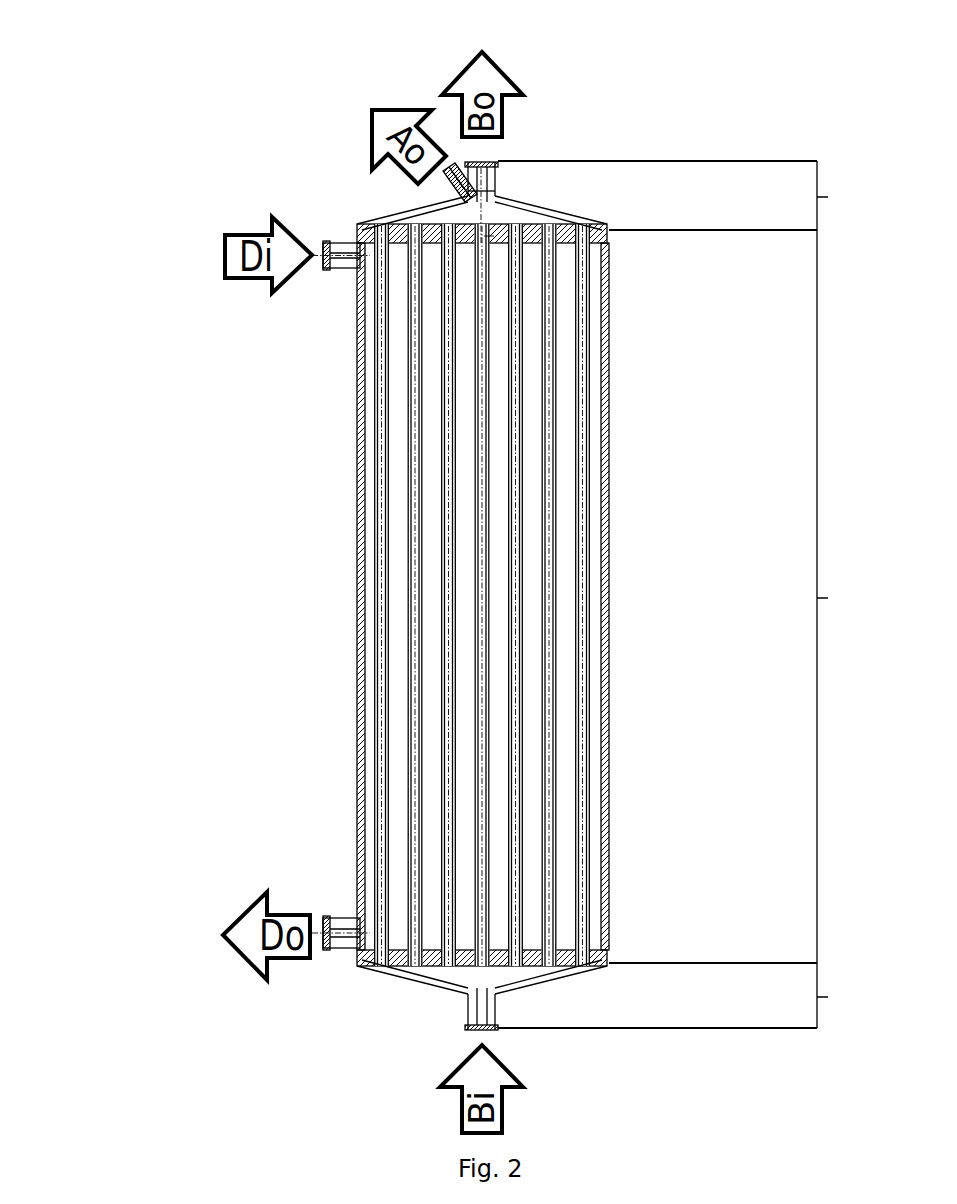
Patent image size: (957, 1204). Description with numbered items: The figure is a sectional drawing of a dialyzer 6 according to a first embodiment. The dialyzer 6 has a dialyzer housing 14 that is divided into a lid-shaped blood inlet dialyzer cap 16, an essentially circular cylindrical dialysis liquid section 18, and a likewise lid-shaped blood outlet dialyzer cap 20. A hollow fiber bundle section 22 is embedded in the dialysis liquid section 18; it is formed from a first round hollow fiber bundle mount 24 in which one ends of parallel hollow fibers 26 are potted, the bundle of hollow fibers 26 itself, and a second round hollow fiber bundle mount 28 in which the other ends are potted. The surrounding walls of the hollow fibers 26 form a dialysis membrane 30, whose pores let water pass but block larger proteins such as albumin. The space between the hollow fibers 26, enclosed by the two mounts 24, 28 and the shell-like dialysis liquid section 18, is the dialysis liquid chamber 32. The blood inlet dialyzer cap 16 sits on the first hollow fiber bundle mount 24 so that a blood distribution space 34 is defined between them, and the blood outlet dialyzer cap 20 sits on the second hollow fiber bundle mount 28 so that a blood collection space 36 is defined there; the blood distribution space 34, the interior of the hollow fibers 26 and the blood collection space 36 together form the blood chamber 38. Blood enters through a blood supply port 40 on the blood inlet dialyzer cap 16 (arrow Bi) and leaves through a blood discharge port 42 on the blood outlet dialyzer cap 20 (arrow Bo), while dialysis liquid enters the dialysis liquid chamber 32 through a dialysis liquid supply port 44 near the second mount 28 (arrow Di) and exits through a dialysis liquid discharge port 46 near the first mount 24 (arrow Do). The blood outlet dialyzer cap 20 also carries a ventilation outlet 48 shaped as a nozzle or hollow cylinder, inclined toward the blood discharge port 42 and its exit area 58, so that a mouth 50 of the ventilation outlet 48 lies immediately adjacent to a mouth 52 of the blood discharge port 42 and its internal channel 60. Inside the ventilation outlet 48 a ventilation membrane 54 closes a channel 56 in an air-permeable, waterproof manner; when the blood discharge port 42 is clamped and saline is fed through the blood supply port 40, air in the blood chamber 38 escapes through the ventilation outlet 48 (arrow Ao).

The dialyzer 6 is at (167, 100).
The dialyzer housing 14 is at (354, 488).
The blood inlet dialyzer cap 16 is at (679, 995).
The dialysis liquid section 18 is at (839, 596).
The blood outlet dialyzer cap 20 is at (679, 195).
The hollow fiber bundle section 22 is at (406, 610).
The first hollow fiber bundle mount 24 is at (453, 953).
The hollow fibers 26 is at (410, 712).
The second hollow fiber bundle mount 28 is at (362, 244).
The dialysis membrane 30 is at (409, 710).
The dialysis liquid chamber 32 is at (433, 548).
The blood distribution space 34 is at (452, 982).
The blood collection space 36 is at (436, 217).
The blood chamber 38 is at (446, 667).
The blood supply port 40 is at (467, 1030).
The blood discharge port 42 is at (497, 182).
The dialysis liquid supply port 44 is at (348, 270).
The dialysis liquid discharge port 46 is at (347, 950).
The ventilation outlet 48 is at (450, 178).
The mouth of the ventilation outlet 50 is at (481, 198).
The mouth of the blood discharge port 52 is at (490, 238).
The ventilation membrane 54 is at (545, 203).
The channel 56 is at (460, 185).
The exit area 58 is at (498, 163).
The channel 60 is at (497, 191).